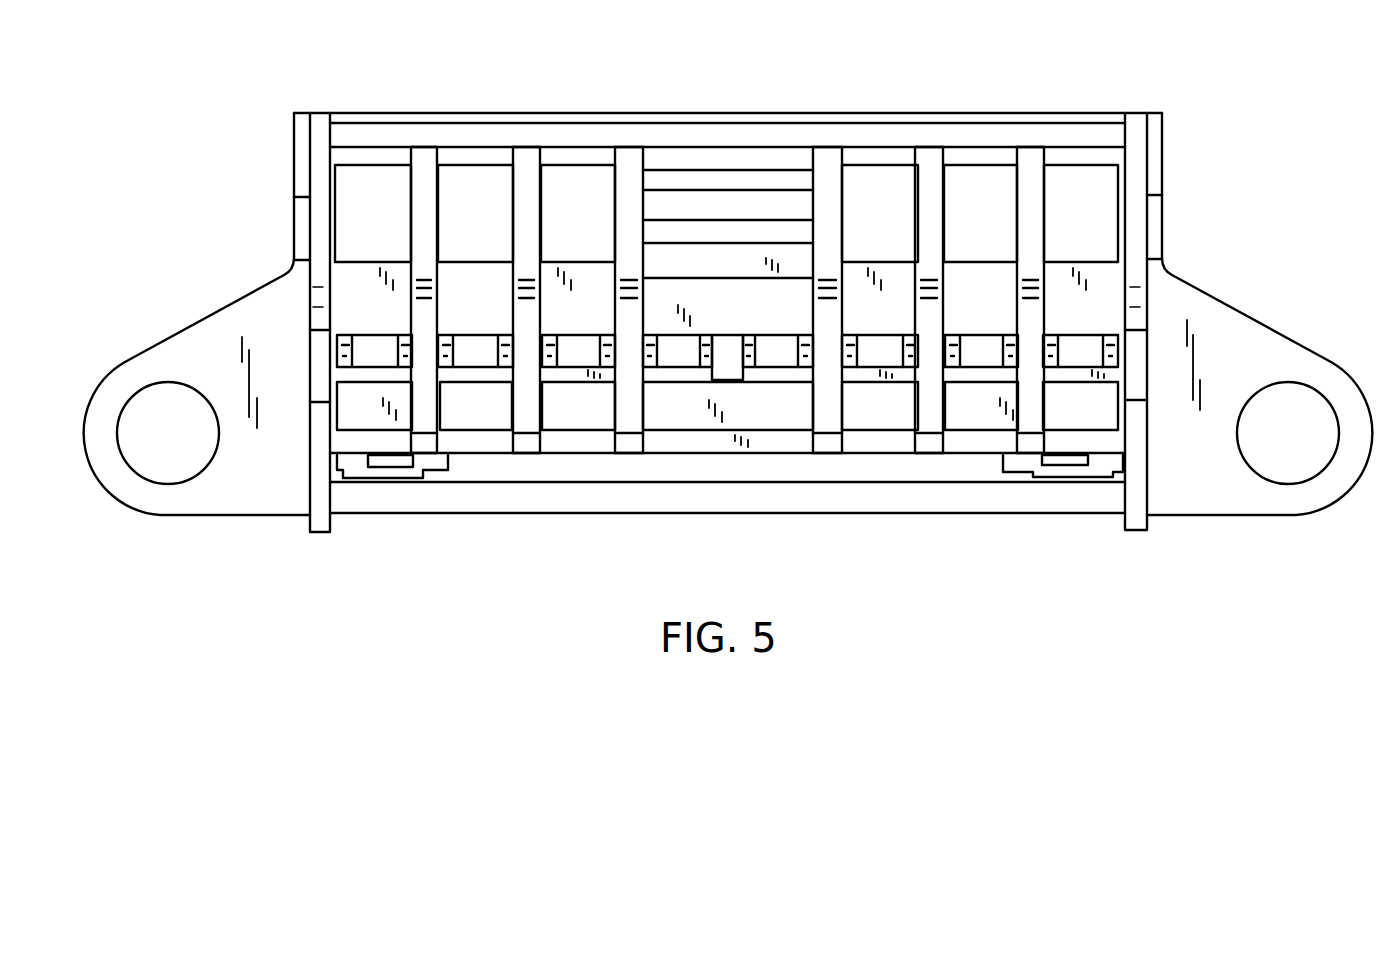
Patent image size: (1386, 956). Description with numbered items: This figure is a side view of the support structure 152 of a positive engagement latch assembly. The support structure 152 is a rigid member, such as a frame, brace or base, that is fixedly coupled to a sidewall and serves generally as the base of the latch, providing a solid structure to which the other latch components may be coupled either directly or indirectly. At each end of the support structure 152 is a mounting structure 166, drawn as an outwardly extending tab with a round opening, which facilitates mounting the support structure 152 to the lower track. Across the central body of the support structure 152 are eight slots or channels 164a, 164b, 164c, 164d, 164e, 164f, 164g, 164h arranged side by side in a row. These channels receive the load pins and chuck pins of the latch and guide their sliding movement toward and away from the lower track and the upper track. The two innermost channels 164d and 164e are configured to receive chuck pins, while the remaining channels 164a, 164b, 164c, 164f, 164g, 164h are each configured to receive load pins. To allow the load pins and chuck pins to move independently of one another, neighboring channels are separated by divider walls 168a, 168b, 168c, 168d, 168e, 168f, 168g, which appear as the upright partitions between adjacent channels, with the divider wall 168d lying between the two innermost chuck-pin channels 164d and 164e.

The support structure 152 is at (350, 113).
The channel 164a is at (375, 363).
The channel 164b is at (490, 363).
The channel 164c is at (590, 363).
The channel 164d is at (690, 363).
The channel 164e is at (783, 363).
The channel 164f is at (886, 363).
The channel 164g is at (988, 363).
The channel 164h is at (1086, 363).
The mounting structure 166 is at (122, 363).
The divider wall 168a is at (427, 342).
The divider wall 168b is at (530, 342).
The divider wall 168c is at (632, 342).
The divider wall 168d is at (731, 350).
The divider wall 168e is at (828, 342).
The divider wall 168f is at (932, 342).
The divider wall 168g is at (1035, 342).